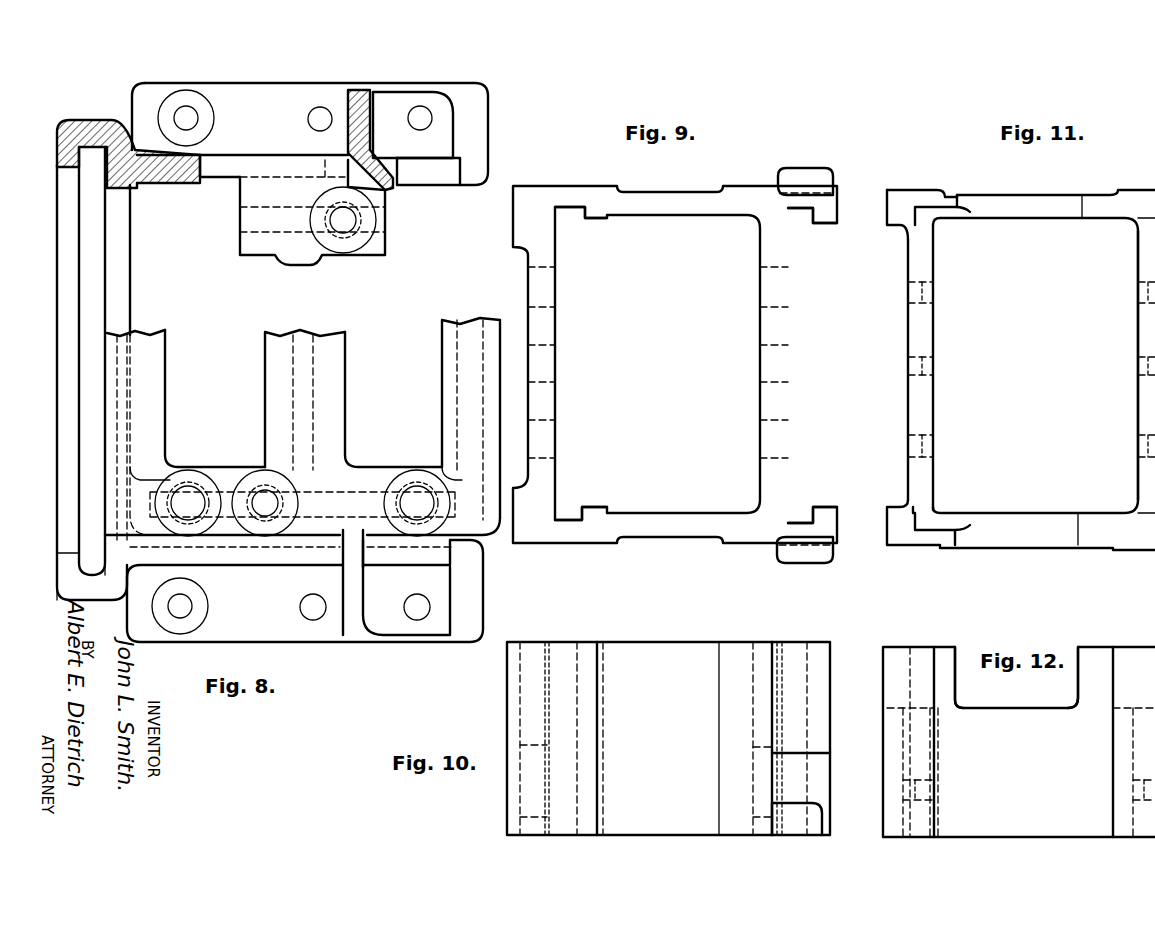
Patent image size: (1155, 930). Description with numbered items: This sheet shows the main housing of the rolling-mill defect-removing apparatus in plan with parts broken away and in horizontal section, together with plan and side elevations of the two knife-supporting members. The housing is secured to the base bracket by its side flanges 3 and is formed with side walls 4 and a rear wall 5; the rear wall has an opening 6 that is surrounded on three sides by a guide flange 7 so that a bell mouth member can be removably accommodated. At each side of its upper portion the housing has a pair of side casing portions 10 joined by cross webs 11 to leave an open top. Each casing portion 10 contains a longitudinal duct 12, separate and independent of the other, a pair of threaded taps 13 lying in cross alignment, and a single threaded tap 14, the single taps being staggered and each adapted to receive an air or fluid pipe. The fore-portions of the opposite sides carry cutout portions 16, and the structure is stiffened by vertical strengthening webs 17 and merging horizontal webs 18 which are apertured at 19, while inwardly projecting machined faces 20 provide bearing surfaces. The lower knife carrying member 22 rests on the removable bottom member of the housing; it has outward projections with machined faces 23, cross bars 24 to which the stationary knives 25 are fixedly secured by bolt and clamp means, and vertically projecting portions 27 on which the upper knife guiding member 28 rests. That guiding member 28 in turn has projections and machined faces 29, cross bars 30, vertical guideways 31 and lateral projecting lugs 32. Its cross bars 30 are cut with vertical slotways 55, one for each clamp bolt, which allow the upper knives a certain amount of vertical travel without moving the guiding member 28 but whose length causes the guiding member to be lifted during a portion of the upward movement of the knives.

In FIG. 8, the side flanges 3 is at (280, 76).
In FIG. 8, the side walls 4 is at (230, 162).
In FIG. 8, the rear wall 5 is at (105, 366).
In FIG. 8, the opening 6 is at (115, 320).
In FIG. 8, the guide flange 7 is at (88, 293).
In FIG. 8, the side casing portions 10 is at (250, 240).
In FIG. 8, the cross webs 11 is at (270, 378).
In FIG. 8, the longitudinal duct 12 is at (256, 208).
In FIG. 8, the threaded taps 13 is at (212, 462).
In FIG. 8, the threaded tap 14 is at (350, 222).
In FIG. 8, the cutout portions 16 is at (385, 170).
In FIG. 8, the vertical strengthening webs 17 is at (345, 101).
In FIG. 8, the horizontal webs 18 is at (408, 103).
In FIG. 8, the apertures 19 is at (433, 118).
In FIG. 8, the machined faces 20 is at (181, 186).
In FIG. 11, the lower knife carrying member 22 is at (1065, 211).
In FIG. 12, the lower knife carrying member 22 is at (1019, 742).
In FIG. 11, the machined faces 23 is at (938, 191).
In FIG. 12, the machined faces 23 is at (925, 745).
In FIG. 11, the cross bars 24 is at (912, 405).
In FIG. 12, the cross bars 24 is at (920, 765).
In FIG. 11, the knives 25 is at (1108, 514).
In FIG. 11, the vertically projecting portions 27 is at (948, 201).
In FIG. 12, the vertically projecting portions 27 is at (948, 690).
In FIG. 9, the upper knife guiding member 28 is at (700, 208).
In FIG. 10, the upper knife guiding member 28 is at (672, 641).
In FIG. 9, the projections and machined faces 29 is at (566, 188).
In FIG. 10, the projections and machined faces 29 is at (505, 712).
In FIG. 9, the cross bars 30 is at (546, 372).
In FIG. 10, the cross bars 30 is at (527, 668).
In FIG. 9, the vertical guideways 31 is at (575, 216).
In FIG. 9, the lateral projecting lugs 32 is at (828, 161).
In FIG. 10, the lateral projecting lugs 32 is at (815, 826).
In FIG. 10, the vertical slotways 55 is at (535, 745).